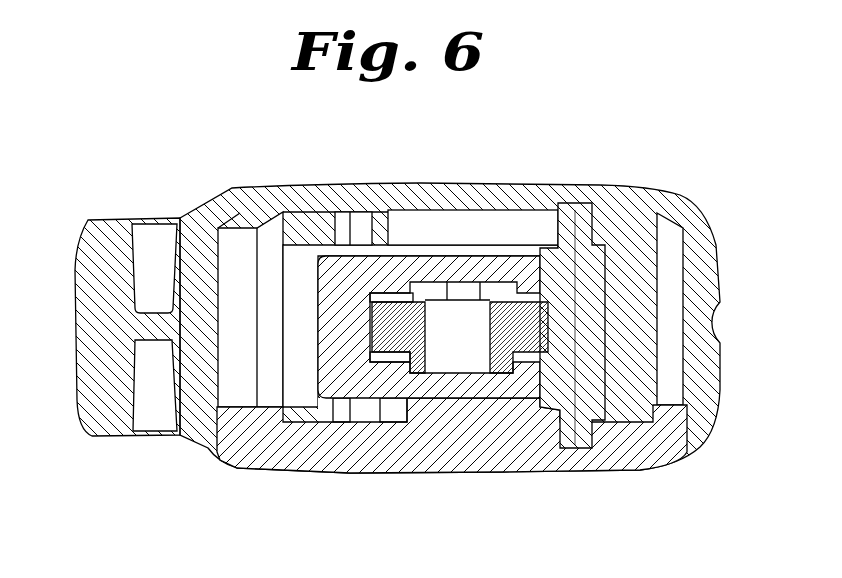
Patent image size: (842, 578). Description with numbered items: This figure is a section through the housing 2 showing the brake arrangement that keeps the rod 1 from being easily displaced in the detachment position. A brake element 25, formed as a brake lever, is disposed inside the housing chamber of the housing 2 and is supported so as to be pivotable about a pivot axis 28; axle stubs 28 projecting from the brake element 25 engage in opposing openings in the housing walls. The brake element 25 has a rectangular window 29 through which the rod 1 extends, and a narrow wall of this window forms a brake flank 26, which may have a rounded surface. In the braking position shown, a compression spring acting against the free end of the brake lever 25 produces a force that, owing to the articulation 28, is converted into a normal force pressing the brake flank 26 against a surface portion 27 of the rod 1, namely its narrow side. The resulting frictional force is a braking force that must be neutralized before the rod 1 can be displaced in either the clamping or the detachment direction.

The rod 1 is at (503, 318).
The housing 2 is at (618, 207).
The brake element 25 is at (376, 375).
The brake flank 26 is at (373, 302).
The surface portion 27 is at (370, 327).
The pivot axis 28 is at (580, 435).
The rectangular window 29 is at (393, 362).